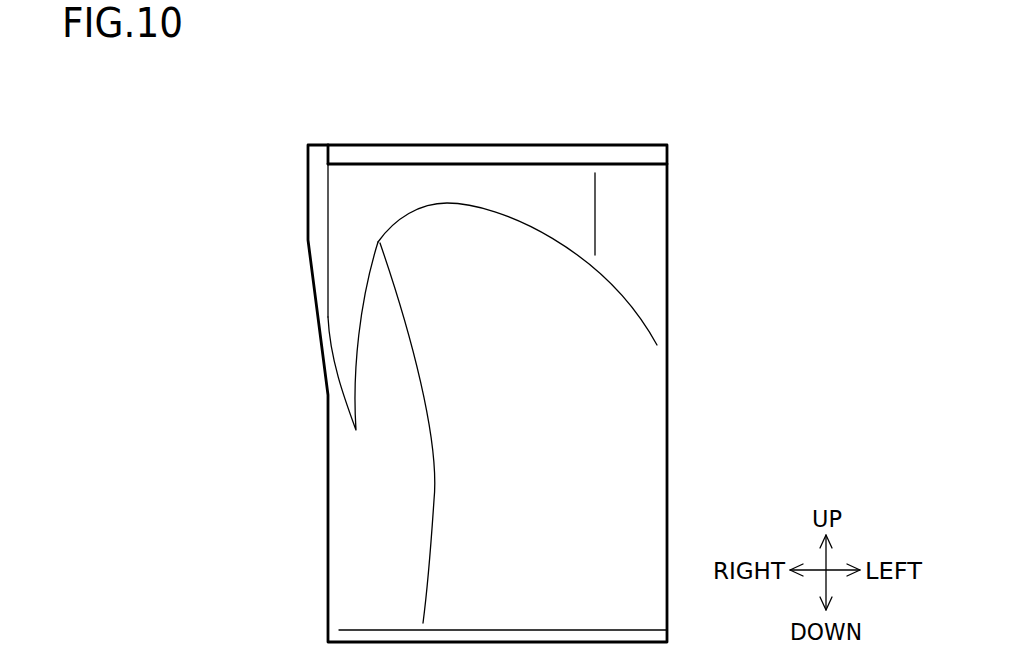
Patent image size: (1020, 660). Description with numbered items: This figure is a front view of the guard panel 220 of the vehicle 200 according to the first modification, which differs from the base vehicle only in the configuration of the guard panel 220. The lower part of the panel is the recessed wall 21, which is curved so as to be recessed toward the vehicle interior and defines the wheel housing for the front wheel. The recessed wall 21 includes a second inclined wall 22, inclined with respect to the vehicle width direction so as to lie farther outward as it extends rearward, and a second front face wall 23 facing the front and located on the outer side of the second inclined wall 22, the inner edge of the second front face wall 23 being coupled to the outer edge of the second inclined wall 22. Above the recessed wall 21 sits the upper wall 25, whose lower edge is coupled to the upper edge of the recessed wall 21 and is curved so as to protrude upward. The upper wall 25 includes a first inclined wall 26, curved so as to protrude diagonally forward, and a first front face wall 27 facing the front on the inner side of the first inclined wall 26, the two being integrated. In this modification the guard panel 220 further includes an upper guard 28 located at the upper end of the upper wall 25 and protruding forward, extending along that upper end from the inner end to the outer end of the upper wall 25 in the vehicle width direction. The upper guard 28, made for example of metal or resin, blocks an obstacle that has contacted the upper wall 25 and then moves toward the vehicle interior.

The vehicle 200 is at (387, 128).
The guard panel 220 is at (688, 139).
The recessed wall 21 is at (668, 443).
The second inclined wall 22 is at (517, 395).
The second front face wall 23 is at (397, 539).
The upper wall 25 is at (326, 198).
The first inclined wall 26 is at (548, 199).
The first front face wall 27 is at (650, 238).
The upper guard 28 is at (622, 164).